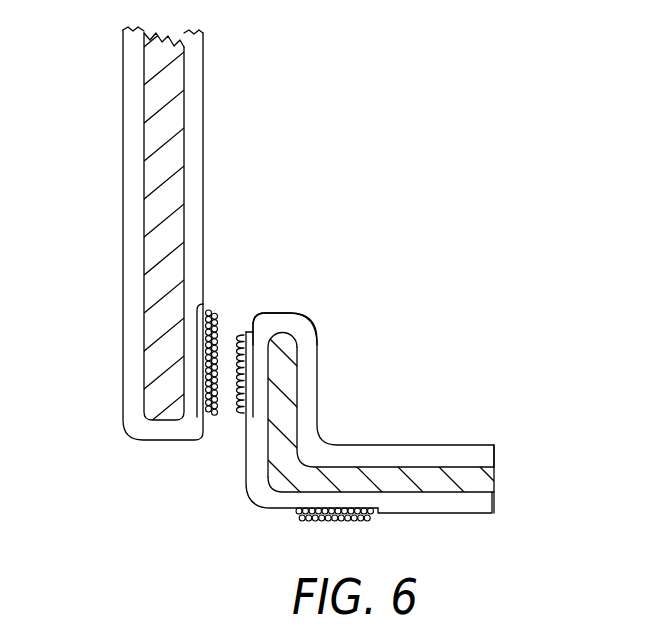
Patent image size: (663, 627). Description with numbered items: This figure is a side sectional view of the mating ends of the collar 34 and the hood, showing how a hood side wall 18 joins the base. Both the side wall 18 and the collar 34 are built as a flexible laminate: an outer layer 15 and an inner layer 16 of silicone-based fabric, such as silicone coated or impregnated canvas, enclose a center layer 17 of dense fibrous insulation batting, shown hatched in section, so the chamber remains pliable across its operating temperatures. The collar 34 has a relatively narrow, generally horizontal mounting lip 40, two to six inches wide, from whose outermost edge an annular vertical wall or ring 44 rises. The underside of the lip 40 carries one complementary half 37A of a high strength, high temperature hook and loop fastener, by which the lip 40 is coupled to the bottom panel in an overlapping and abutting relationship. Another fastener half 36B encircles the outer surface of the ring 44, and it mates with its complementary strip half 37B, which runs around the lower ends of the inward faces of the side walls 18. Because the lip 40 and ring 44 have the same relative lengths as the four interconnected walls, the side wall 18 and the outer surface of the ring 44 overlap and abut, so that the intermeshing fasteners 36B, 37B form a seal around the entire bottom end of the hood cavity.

The outer layer 15 is at (132, 219).
The inner layer 16 is at (195, 177).
The center layer 17 is at (168, 232).
The side wall 18 is at (207, 98).
The collar 34 is at (432, 427).
The fastener half 36B is at (232, 348).
The complementary fastener half 37A is at (302, 522).
The complementary fastener strip half 37B is at (215, 420).
The mounting lip 40 is at (472, 447).
The ring 44 is at (317, 338).